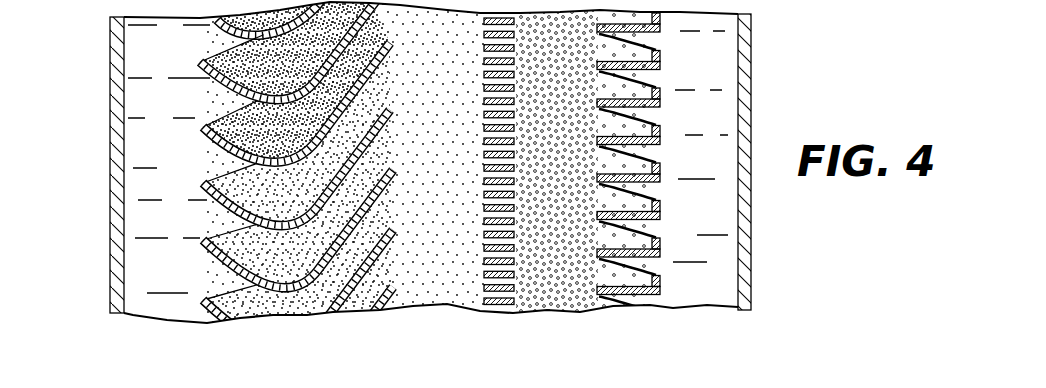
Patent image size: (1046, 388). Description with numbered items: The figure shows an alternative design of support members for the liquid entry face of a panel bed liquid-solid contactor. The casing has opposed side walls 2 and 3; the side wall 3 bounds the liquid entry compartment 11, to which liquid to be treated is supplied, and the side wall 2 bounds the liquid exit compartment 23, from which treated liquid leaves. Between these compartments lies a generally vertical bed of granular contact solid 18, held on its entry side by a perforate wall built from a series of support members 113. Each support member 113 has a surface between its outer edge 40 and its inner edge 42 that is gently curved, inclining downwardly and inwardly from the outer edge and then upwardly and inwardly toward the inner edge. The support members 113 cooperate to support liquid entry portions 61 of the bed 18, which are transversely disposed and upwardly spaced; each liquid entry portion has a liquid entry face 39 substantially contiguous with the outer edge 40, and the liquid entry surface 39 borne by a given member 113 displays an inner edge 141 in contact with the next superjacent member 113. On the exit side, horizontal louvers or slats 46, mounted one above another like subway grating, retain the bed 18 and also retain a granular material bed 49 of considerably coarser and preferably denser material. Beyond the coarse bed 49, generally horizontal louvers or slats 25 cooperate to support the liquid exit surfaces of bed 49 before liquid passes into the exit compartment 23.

The side wall 2 is at (753, 270).
The side wall 3 is at (110, 218).
The liquid entry compartment 11 is at (153, 163).
The bed of granular contact solid 18 is at (433, 285).
The liquid exit compartment 23 is at (703, 215).
The louvers or slats 25 is at (663, 62).
The liquid entry face 39 is at (227, 233).
The outer edge 40 is at (222, 56).
The inner edge 42 is at (391, 108).
The louvers or slats 46 is at (516, 153).
The granular material bed 49 is at (560, 292).
The liquid entry portion 61 is at (260, 247).
The support member 113 is at (233, 151).
The inner edge 141 is at (263, 97).